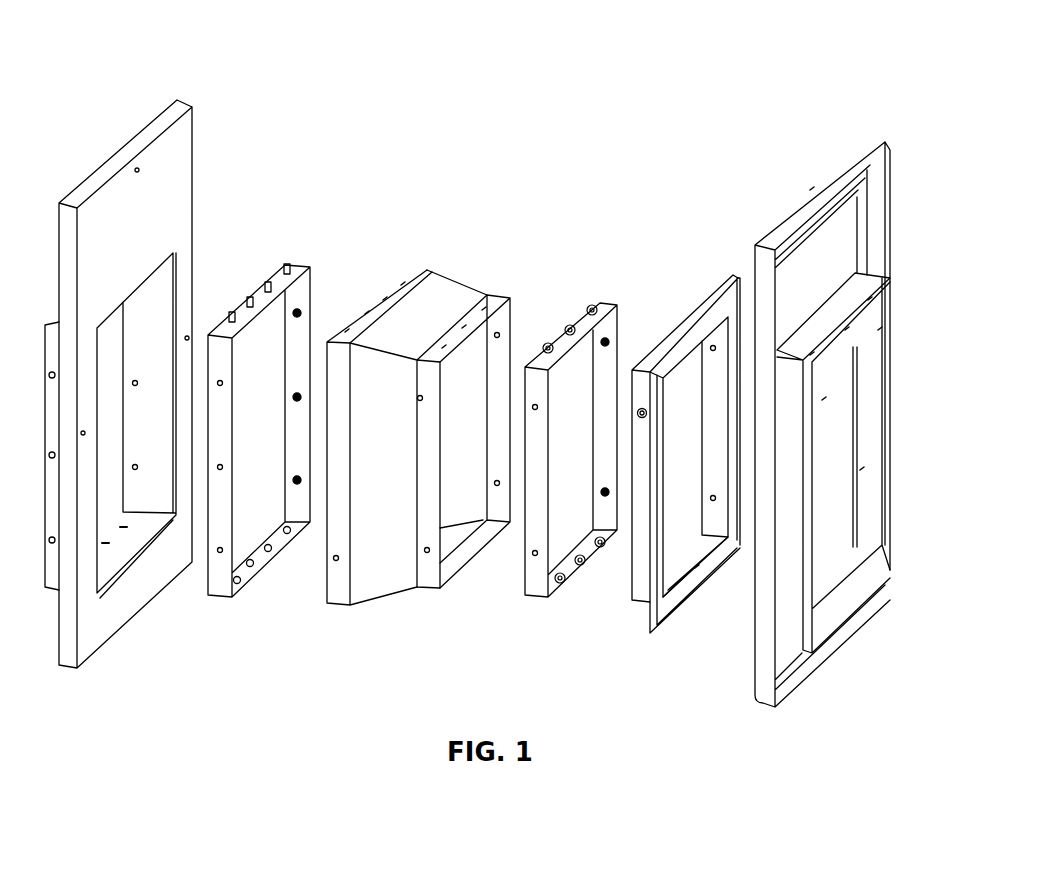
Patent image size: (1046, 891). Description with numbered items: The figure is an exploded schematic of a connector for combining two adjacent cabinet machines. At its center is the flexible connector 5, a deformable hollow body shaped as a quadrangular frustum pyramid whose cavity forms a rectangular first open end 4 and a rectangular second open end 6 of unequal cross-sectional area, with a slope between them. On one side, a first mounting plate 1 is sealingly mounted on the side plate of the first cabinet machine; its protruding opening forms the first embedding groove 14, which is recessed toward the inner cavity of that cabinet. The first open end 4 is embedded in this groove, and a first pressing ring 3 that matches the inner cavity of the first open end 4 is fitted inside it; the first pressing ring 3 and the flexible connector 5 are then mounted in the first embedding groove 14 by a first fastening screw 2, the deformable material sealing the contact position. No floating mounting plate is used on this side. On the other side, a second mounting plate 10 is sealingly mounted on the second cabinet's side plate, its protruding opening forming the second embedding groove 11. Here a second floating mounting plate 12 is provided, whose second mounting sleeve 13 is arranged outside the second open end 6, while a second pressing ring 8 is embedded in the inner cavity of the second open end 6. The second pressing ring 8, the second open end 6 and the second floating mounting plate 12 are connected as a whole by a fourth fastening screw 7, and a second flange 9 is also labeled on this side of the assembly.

The first mounting plate 1 is at (183, 125).
The first fastening screw 2 is at (232, 318).
The first pressing ring 3 is at (310, 268).
The first open end 4 is at (405, 275).
The flexible connector 5 is at (455, 287).
The second open end 6 is at (497, 295).
The fourth fastening screw 7 is at (548, 345).
The second pressing ring 8 is at (608, 307).
The second flange 9 is at (707, 287).
The second mounting plate 10 is at (865, 140).
The second embedding groove 11 is at (870, 540).
The second floating mounting plate 12 is at (670, 580).
The second mounting sleeve 13 is at (637, 593).
The first embedding groove 14 is at (113, 500).